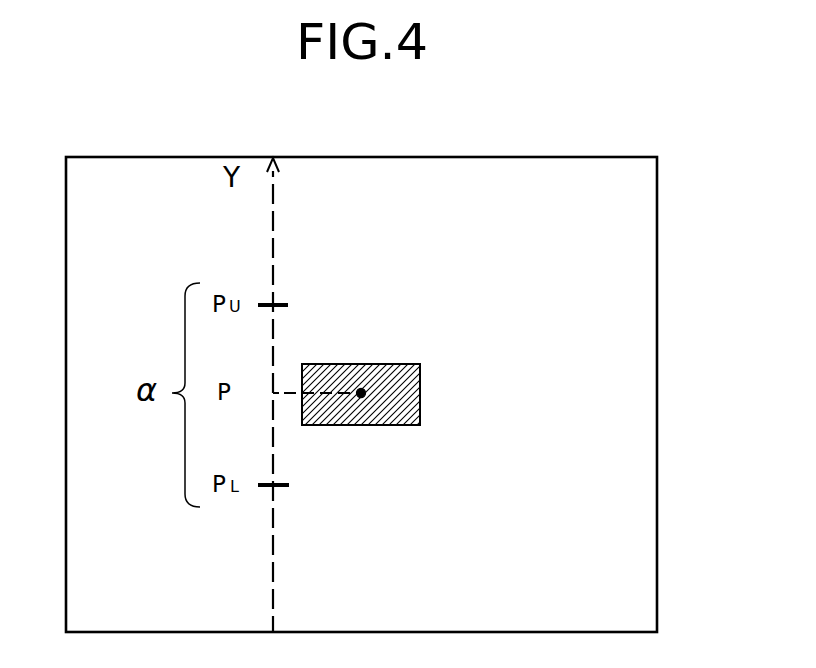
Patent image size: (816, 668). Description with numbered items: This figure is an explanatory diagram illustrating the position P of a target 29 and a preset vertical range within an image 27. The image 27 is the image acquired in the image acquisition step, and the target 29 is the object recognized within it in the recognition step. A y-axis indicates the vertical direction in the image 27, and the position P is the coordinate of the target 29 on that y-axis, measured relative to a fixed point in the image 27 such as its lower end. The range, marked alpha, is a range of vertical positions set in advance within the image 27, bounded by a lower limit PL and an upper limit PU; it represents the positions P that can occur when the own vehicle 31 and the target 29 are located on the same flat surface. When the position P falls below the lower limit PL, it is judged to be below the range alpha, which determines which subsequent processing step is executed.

The image 27 is at (550, 157).
The target 29 is at (420, 390).
The own vehicle 31 is at (276, 632).